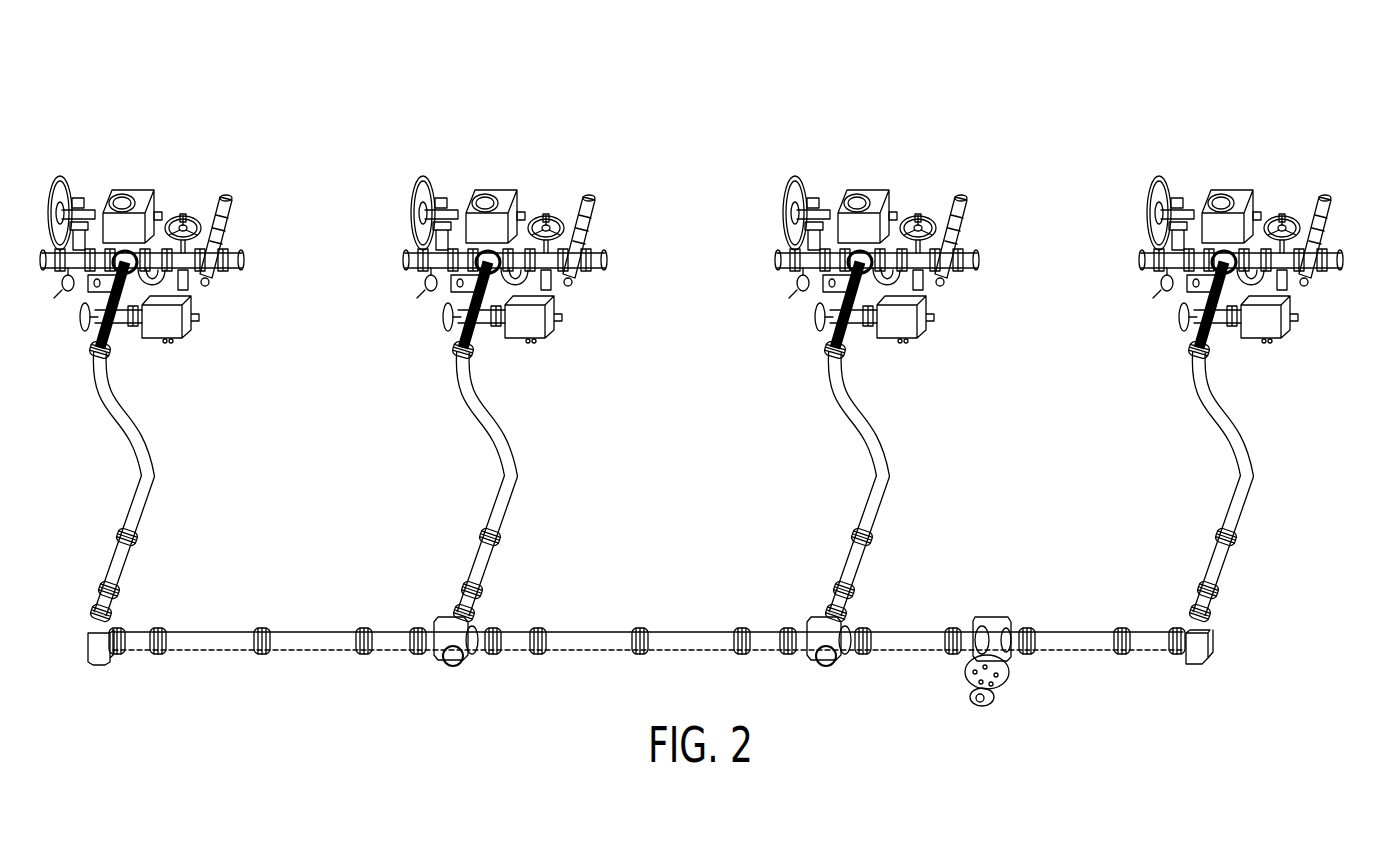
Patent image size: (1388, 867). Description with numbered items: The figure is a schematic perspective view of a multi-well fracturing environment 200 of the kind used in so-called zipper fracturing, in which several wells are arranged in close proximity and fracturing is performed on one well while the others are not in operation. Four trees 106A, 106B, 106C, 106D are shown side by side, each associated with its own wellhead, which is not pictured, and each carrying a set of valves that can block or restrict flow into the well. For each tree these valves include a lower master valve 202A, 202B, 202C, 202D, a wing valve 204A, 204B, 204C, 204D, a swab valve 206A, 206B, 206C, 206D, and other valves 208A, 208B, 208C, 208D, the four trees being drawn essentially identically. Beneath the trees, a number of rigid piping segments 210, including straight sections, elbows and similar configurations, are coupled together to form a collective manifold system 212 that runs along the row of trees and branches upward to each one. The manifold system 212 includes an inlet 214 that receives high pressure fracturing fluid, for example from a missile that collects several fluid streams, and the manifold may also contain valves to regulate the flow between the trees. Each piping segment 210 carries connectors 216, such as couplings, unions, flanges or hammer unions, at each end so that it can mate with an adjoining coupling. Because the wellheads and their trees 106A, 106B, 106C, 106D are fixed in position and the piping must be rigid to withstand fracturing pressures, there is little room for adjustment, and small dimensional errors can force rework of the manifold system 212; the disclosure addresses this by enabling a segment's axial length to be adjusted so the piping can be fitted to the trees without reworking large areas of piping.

The environment 200 is at (1096, 47).
The tree 106A is at (91, 171).
The tree 106B is at (509, 245).
The tree 106C is at (881, 245).
The tree 106D is at (1245, 245).
The lower master valve 202A is at (186, 332).
The lower master valve 202B is at (550, 326).
The lower master valve 202C is at (922, 326).
The lower master valve 202D is at (1286, 326).
The wing valve 204A is at (191, 218).
The wing valve 204B is at (562, 219).
The wing valve 204C is at (934, 219).
The wing valve 204D is at (1299, 219).
The swab valve 206A is at (138, 193).
The swab valve 206B is at (501, 201).
The swab valve 206C is at (873, 201).
The swab valve 206D is at (1238, 201).
The other valve 208A is at (50, 320).
The other valve 208B is at (419, 350).
The other valve 208C is at (791, 350).
The other valve 208D is at (1154, 350).
The piping segment 210 is at (886, 459).
The manifold system 212 is at (1198, 718).
The inlet 214 is at (983, 706).
The connector 216 is at (108, 354).